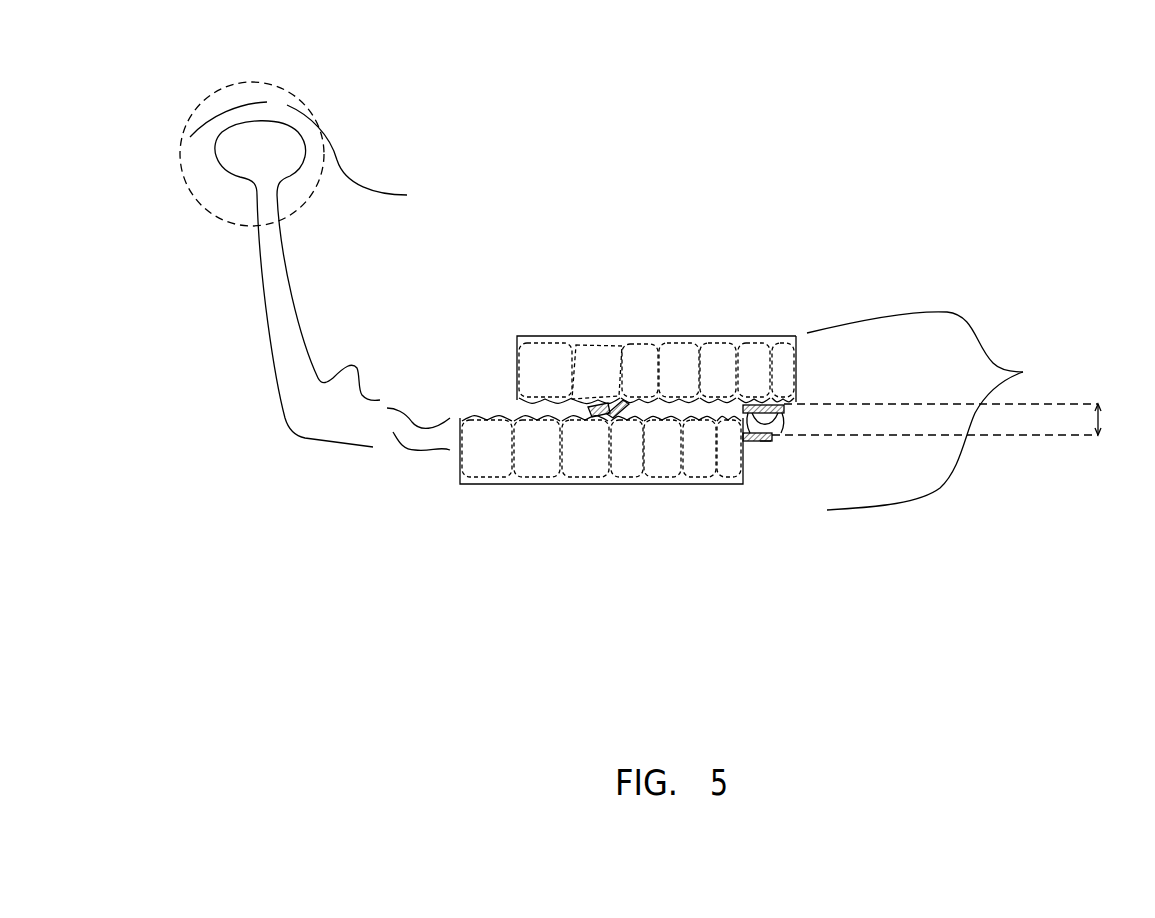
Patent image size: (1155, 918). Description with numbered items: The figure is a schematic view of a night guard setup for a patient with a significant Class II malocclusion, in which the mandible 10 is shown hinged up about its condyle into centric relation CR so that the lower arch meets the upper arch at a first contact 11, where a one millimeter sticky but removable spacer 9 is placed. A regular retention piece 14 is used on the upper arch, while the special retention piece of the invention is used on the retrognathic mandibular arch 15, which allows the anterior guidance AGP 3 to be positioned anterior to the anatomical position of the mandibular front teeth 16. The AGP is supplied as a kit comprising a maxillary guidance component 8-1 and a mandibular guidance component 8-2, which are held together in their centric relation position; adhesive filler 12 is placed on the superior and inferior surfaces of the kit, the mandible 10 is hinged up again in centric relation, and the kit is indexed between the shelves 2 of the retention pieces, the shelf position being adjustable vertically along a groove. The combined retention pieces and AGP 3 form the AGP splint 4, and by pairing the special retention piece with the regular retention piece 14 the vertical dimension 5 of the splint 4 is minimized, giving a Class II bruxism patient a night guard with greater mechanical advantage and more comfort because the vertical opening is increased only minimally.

The centric relation C is at (272, 110).
The centric relation R is at (517, 212).
The mandible 10 is at (333, 422).
The first contact 11 is at (603, 400).
The spacer 9 is at (609, 418).
The regular retention piece 14 is at (770, 346).
The adhesive filler 12 is at (797, 397).
The retrognathic mandibular arch 15 is at (518, 420).
The mandibular front teeth 16 is at (732, 462).
The maxillary guidance component 8-1 is at (785, 408).
The mandibular guidance component 8-2 is at (757, 443).
The AGP 3 is at (776, 416).
The shelves 2 is at (768, 443).
The AGP splint 4 is at (928, 411).
The vertical dimension 5 is at (951, 417).